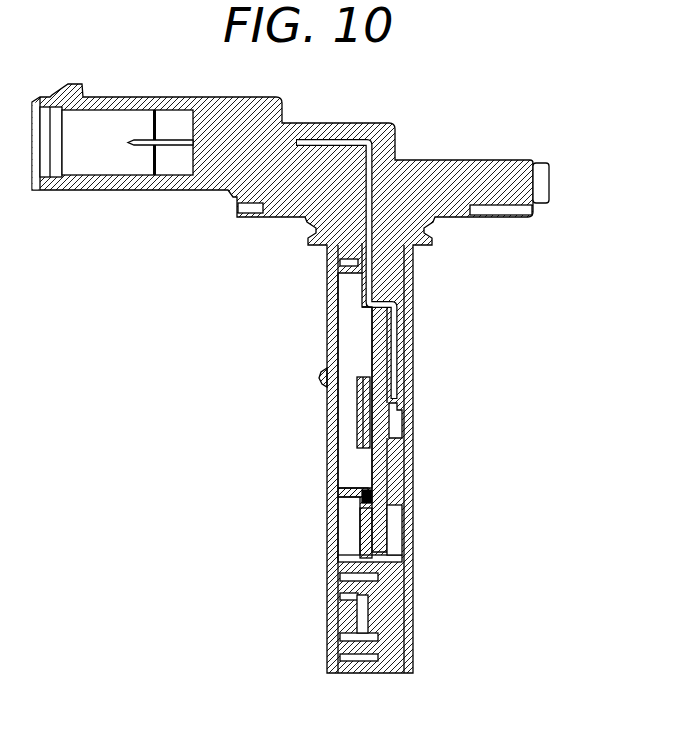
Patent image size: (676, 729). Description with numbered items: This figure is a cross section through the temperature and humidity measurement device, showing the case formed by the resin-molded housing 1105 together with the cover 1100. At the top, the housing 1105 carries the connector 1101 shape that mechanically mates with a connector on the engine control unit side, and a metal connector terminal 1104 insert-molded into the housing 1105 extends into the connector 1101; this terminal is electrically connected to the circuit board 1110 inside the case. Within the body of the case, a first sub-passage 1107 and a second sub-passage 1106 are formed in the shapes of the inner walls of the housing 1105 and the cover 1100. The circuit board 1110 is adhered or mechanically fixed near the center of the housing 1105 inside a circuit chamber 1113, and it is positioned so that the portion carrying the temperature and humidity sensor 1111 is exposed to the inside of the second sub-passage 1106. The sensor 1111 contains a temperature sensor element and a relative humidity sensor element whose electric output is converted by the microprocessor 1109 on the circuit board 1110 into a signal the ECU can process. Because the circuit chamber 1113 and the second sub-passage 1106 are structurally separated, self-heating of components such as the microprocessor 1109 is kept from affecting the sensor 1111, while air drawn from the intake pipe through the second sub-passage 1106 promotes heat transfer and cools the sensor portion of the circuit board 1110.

The connector 1101 is at (120, 97).
The connector terminal 1104 is at (173, 145).
The cover 1100 is at (325, 413).
The circuit chamber 1113 is at (327, 460).
The second sub-passage 1106 is at (345, 520).
The temperature and humidity sensor 1111 is at (360, 533).
The microprocessor 1109 is at (395, 402).
The housing 1105 is at (400, 466).
The circuit board 1110 is at (378, 523).
The first sub-passage 1107 is at (362, 613).